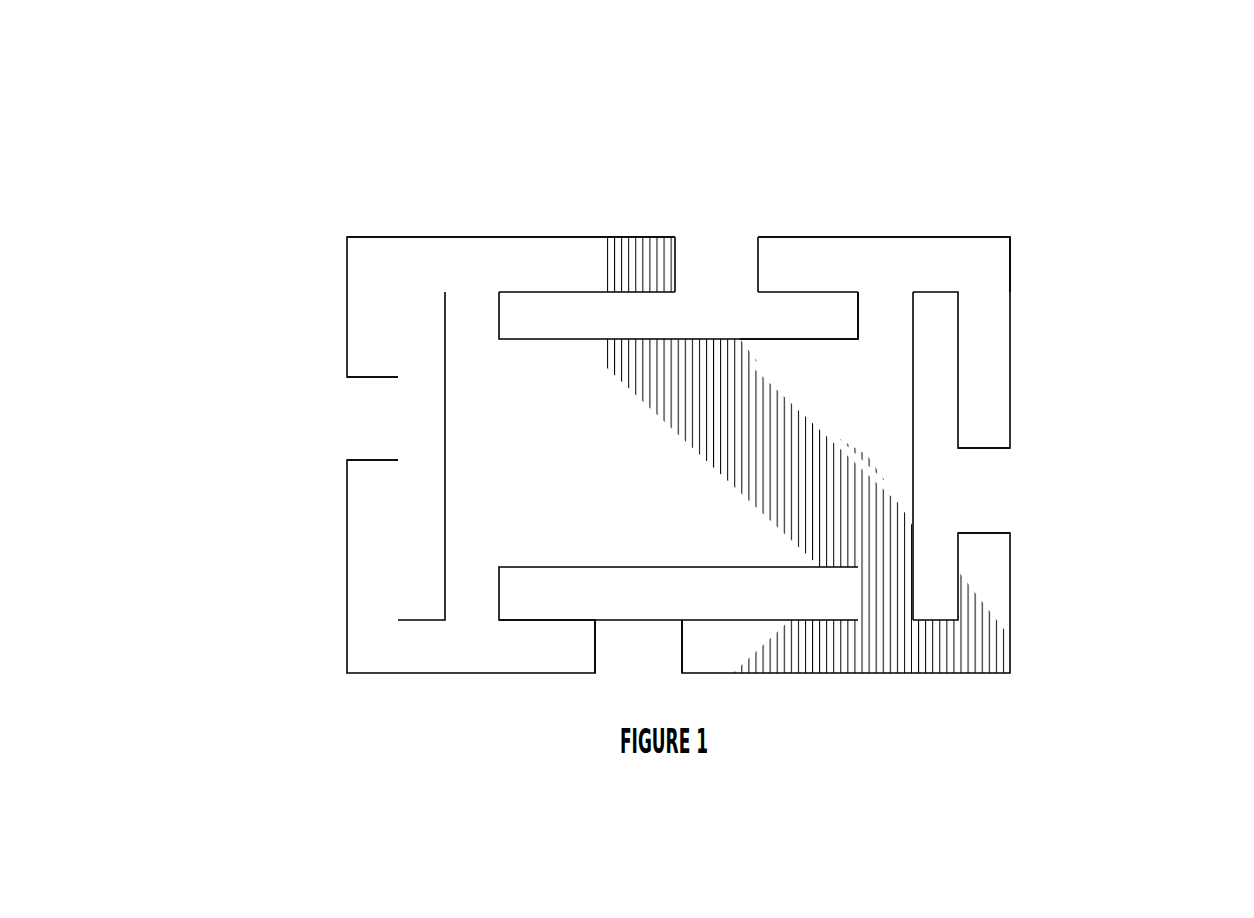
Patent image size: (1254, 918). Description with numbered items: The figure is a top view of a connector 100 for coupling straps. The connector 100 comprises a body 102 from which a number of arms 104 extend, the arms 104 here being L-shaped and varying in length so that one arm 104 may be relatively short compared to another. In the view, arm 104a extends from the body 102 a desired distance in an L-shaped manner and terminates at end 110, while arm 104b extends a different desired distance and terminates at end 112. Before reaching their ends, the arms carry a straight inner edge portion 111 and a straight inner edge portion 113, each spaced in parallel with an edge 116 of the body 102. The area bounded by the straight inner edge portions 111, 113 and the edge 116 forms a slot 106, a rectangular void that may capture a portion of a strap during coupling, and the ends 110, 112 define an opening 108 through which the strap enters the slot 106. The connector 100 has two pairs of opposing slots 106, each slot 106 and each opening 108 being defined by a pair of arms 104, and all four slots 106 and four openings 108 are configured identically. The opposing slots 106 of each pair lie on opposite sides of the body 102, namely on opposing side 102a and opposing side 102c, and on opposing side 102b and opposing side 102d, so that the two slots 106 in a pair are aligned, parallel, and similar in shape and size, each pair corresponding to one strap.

The connector 100 is at (687, 444).
The body 102 is at (497, 445).
The opposing side 102a is at (625, 128).
The opposing side 102b is at (330, 349).
The opposing side 102c is at (835, 767).
The opposing side 102d is at (1078, 558).
The arm 104 is at (358, 275).
The arm 104a is at (577, 237).
The arm 104b is at (813, 237).
The slot 106 is at (703, 308).
The opening 108 is at (724, 255).
The end 110 is at (677, 262).
The straight inner edge portion 111 is at (548, 292).
The end 112 is at (757, 263).
The straight inner edge portion 113 is at (828, 292).
The edge of the body 116 is at (830, 338).